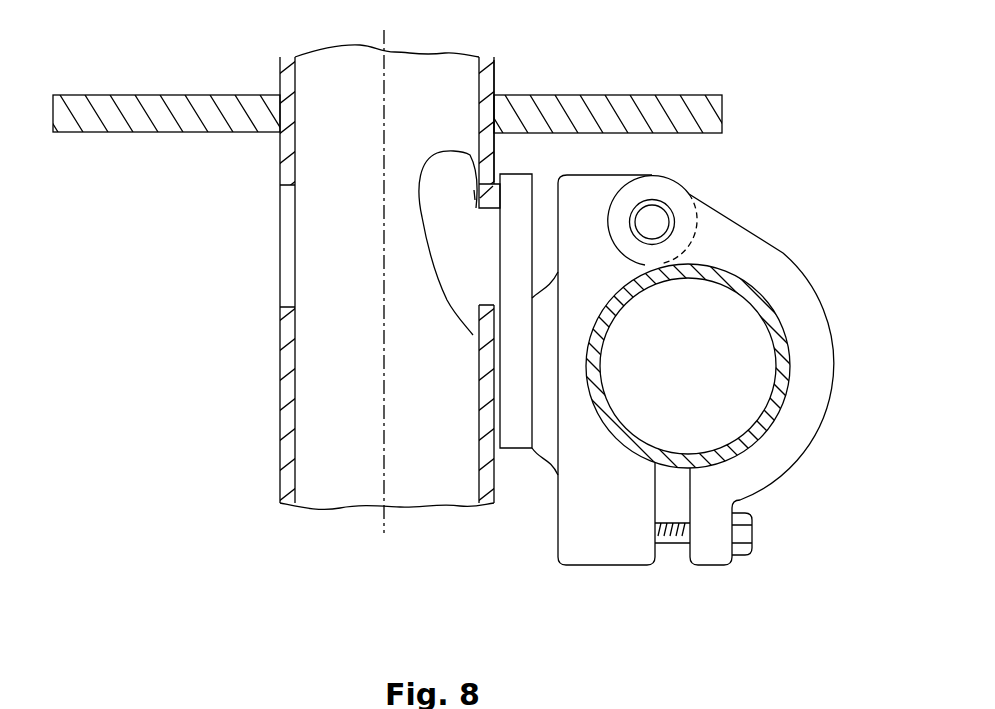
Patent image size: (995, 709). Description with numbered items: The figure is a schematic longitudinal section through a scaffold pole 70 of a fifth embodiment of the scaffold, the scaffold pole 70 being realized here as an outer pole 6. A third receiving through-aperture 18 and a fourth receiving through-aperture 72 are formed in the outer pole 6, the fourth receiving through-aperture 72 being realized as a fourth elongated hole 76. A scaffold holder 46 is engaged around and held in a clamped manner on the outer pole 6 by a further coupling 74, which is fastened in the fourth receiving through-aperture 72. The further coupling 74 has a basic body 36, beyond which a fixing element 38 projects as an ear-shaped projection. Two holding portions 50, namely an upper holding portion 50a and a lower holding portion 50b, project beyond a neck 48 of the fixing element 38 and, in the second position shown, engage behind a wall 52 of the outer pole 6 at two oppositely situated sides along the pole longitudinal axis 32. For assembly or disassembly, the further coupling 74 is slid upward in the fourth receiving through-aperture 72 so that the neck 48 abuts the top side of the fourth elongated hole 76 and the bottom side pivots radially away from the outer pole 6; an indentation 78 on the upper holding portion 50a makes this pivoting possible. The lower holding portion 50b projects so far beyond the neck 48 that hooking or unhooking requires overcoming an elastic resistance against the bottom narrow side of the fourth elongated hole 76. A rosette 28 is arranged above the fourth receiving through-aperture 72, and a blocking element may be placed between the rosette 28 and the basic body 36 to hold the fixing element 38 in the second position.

The outer pole 6 is at (384, 318).
The scaffold pole 70 is at (335, 463).
The third receiving through-aperture 18 is at (288, 290).
The rosette 28 is at (120, 107).
The pole longitudinal axis 32 is at (389, 70).
The basic body 36 is at (515, 437).
The fixing element 38 is at (418, 260).
The scaffold holder 46 is at (776, 329).
The neck 48 is at (492, 257).
The holding portions 50 is at (472, 294).
The upper holding portion 50a is at (445, 173).
The lower holding portion 50b is at (470, 320).
The wall 52 is at (487, 160).
The fourth receiving through-aperture 72 is at (588, 119).
The further coupling 74 is at (764, 208).
The fourth elongated hole 76 is at (484, 200).
The indentation 78 is at (463, 202).